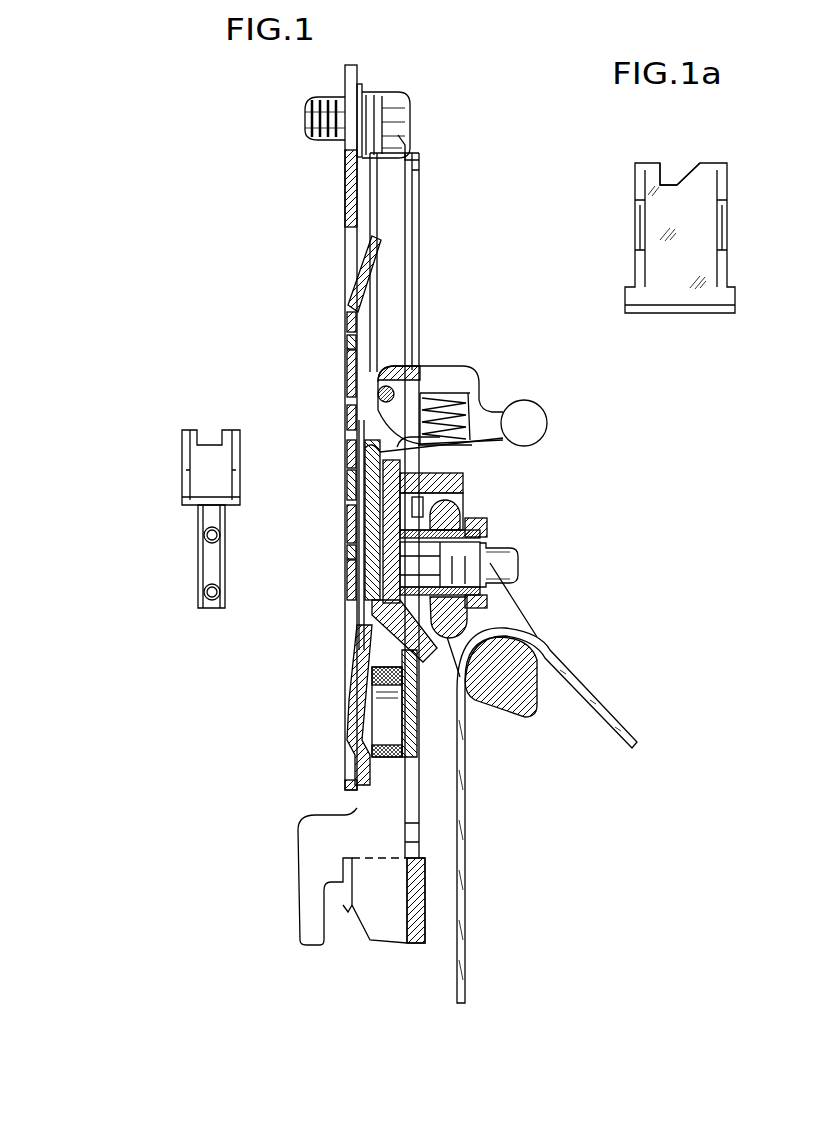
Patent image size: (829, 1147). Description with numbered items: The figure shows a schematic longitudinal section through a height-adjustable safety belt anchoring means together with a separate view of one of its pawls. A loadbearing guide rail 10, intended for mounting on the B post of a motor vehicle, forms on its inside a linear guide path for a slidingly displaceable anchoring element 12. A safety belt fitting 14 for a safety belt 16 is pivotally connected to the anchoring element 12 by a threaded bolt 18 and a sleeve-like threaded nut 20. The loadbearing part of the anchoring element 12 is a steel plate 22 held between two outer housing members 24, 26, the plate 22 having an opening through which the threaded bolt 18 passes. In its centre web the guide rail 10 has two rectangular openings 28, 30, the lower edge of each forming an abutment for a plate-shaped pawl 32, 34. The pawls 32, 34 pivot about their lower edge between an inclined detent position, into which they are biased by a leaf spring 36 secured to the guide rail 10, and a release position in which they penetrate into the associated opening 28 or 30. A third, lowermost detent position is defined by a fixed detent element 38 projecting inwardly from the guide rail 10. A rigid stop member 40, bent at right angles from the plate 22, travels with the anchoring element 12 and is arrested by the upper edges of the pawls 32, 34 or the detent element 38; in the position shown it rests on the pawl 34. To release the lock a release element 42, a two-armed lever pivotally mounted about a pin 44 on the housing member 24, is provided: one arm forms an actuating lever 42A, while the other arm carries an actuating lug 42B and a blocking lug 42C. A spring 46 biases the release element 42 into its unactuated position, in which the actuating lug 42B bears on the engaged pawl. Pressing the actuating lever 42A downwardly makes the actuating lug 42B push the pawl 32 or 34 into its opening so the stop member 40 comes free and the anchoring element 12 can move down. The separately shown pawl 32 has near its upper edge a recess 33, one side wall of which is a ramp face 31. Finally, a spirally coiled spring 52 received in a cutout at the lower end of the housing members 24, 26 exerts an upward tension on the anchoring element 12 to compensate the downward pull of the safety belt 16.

In FIG. 1, the loadbearing guide rail 10 is at (362, 812).
In FIG. 1, the anchoring element 12 is at (521, 514).
In FIG. 1, the safety belt fitting 14 is at (512, 718).
In FIG. 1, the safety belt 16 is at (465, 879).
In FIG. 1, the threaded bolt 18 is at (520, 548).
In FIG. 1, the sleeve-like threaded nut 20 is at (487, 597).
In FIG. 1, the plate 22 is at (370, 508).
In FIG. 1, the housing member 24 is at (370, 617).
In FIG. 1, the housing member 26 is at (464, 487).
In FIG. 1, the rectangular opening 28 is at (347, 243).
In FIG. 1, the rectangular opening 30 is at (347, 422).
In FIG. 1a, the ramp face 31 is at (690, 172).
In FIG. 1, the plate-shaped pawl 32 is at (378, 252).
In FIG. 1a, the plate-shaped pawl 32 is at (652, 204).
In FIG. 1a, the recess 33 is at (670, 183).
In FIG. 1, the plate-shaped pawl 34 is at (352, 480).
In FIG. 1, the leaf spring 36 is at (345, 344).
In FIG. 1, the fixed detent element 38 is at (355, 674).
In FIG. 1, the rigid stop member 40 is at (348, 410).
In FIG. 1, the release element 42 is at (466, 384).
In FIG. 1, the actuating lever 42A is at (530, 410).
In FIG. 1, the actuating lug 42B is at (368, 452).
In FIG. 1, the blocking lug 42C is at (440, 456).
In FIG. 1, the pin 44 is at (392, 388).
In FIG. 1, the spring 46 is at (438, 393).
In FIG. 1, the spirally coiled spring 52 is at (392, 758).